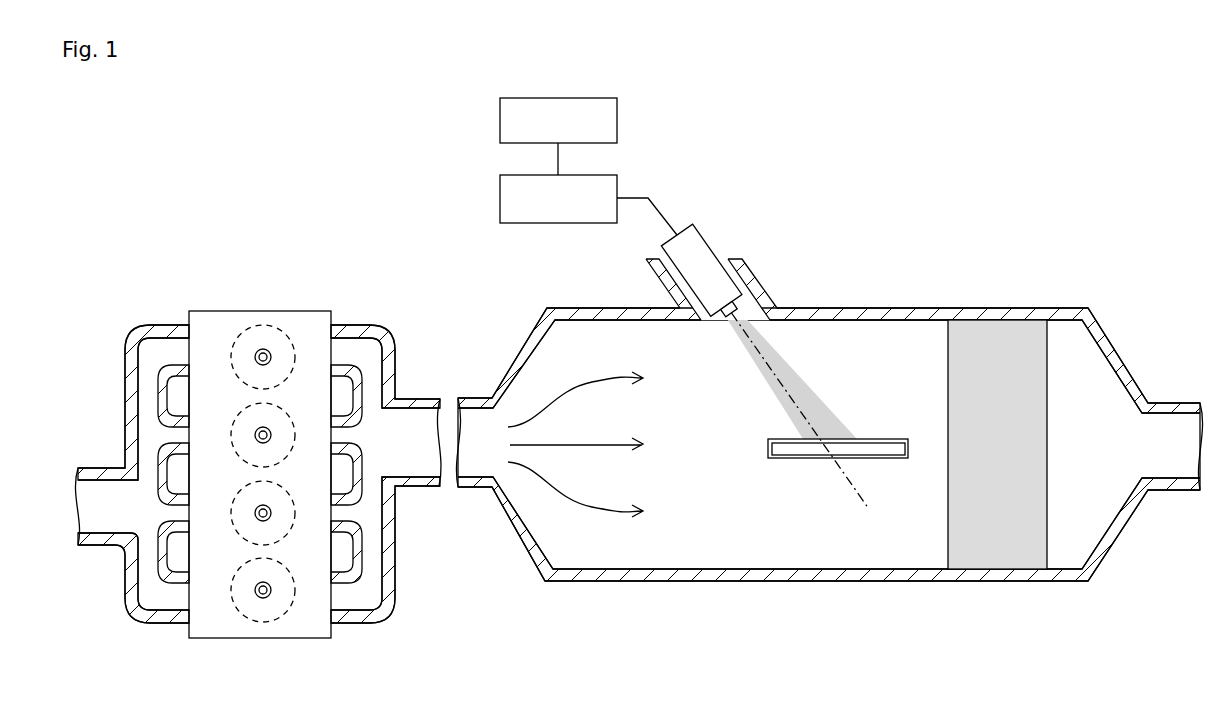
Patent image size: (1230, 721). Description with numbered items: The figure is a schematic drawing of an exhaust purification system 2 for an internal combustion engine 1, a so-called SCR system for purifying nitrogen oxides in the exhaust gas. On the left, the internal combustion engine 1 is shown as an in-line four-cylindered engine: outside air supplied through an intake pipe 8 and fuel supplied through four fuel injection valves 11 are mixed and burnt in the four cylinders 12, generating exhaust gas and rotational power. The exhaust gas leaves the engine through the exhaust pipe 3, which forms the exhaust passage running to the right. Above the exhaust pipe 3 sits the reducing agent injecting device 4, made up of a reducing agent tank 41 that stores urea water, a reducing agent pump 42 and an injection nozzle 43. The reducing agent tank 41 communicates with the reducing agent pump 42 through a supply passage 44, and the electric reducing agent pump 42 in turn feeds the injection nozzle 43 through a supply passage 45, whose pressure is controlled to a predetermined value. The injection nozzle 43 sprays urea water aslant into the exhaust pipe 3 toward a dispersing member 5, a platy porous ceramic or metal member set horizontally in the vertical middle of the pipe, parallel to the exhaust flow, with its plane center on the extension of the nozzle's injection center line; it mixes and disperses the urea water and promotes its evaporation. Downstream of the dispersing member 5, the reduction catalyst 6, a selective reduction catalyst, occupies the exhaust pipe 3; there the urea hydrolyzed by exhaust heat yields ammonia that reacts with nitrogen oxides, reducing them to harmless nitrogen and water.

The internal combustion engine 1 is at (322, 267).
The exhaust purification system 2 is at (829, 363).
The exhaust pipe 3 is at (876, 308).
The reducing agent injecting device 4 is at (683, 302).
The dispersing member 5 is at (803, 452).
The reduction catalyst 6 is at (1011, 463).
The intake pipe 8 is at (103, 467).
The fuel injection valve 11 is at (300, 613).
The cylinder 12 is at (229, 567).
The reducing agent tank 41 is at (575, 133).
The reducing agent pump 42 is at (575, 213).
The injection nozzle 43 is at (698, 240).
The supply passage 44 is at (563, 158).
The supply passage 45 is at (658, 203).